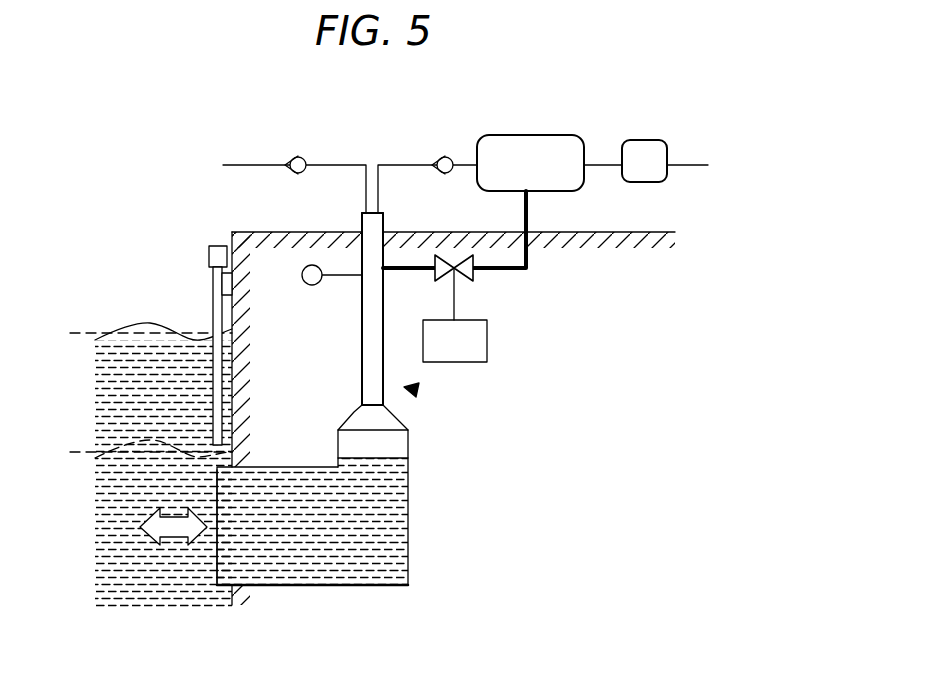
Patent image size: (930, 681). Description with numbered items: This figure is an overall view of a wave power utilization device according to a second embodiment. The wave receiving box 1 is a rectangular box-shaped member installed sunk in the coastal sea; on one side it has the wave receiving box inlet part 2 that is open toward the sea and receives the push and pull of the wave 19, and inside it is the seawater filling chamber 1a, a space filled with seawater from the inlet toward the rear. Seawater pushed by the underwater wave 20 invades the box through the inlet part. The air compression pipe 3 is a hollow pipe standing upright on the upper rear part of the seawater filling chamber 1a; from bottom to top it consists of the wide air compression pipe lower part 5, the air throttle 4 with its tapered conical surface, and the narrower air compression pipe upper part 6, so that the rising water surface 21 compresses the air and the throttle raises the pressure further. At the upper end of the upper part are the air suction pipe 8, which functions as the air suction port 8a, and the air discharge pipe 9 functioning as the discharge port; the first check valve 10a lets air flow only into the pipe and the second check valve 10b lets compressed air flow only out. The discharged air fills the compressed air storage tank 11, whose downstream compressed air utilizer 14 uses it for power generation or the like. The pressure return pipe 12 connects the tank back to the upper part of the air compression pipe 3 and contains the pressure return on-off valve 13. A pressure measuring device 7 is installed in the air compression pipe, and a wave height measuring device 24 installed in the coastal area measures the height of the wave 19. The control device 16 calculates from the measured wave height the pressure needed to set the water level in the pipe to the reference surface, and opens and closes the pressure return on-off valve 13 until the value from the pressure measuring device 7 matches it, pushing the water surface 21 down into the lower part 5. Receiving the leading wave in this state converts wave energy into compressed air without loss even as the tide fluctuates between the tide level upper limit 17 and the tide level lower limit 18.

The wave receiving box 1 is at (349, 562).
The seawater filling chamber 1a is at (266, 563).
The wave receiving box inlet part 2 is at (215, 560).
The air compression pipe 3 is at (412, 388).
The air throttle 4 is at (373, 417).
The air compression pipe lower part 5 is at (350, 445).
The air compression pipe upper part 6 is at (362, 322).
The pressure measuring device 7 is at (303, 267).
The air suction pipe 8 is at (365, 163).
The air suction port 8a is at (360, 213).
The air discharge pipe 9 is at (390, 163).
The first check valve 10a is at (292, 153).
The second check valve 10b is at (440, 152).
The compressed air storage tank 11 is at (545, 160).
The pressure return pipe 12 is at (528, 257).
The pressure return on-off valve 13 is at (462, 272).
The compressed air utilizer 14 is at (643, 150).
The control device 16 is at (467, 340).
The tide level upper limit 17 is at (72, 333).
The tide level lower limit 18 is at (73, 455).
The wave 19 is at (150, 442).
The wave (underwater) 20 is at (163, 525).
The water surface 21 is at (382, 521).
The wave height measuring device 24 is at (209, 252).